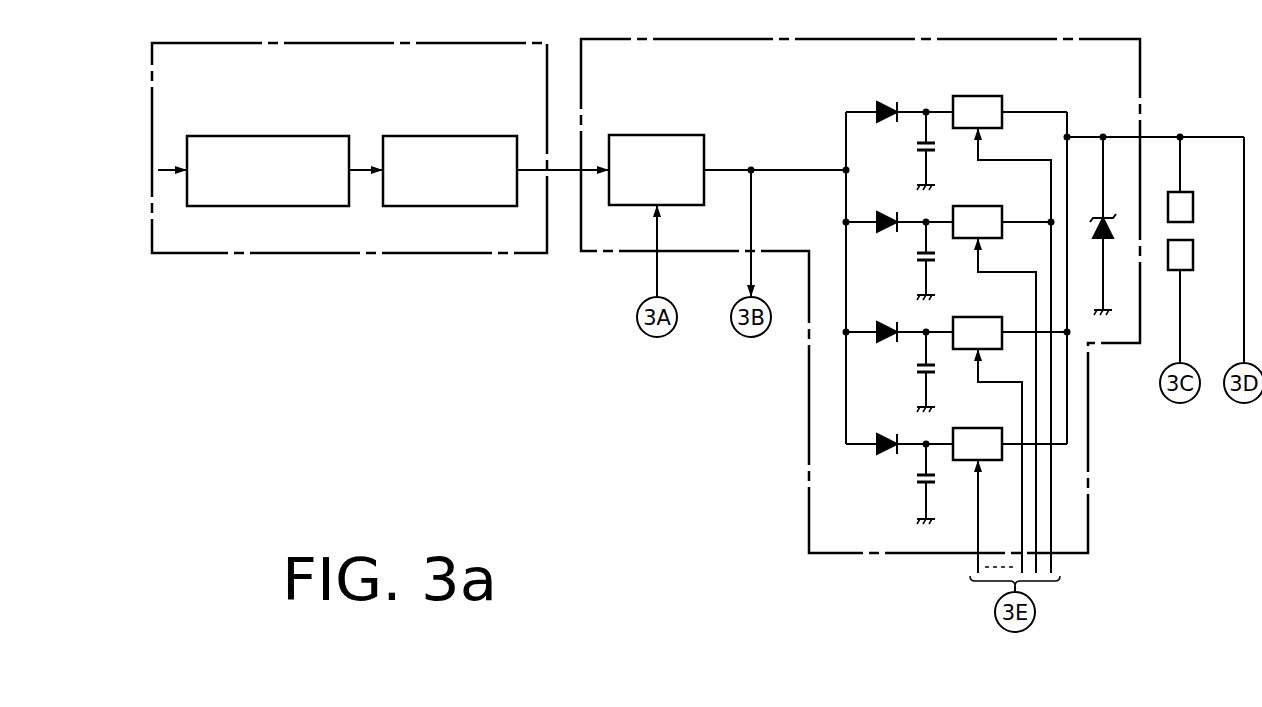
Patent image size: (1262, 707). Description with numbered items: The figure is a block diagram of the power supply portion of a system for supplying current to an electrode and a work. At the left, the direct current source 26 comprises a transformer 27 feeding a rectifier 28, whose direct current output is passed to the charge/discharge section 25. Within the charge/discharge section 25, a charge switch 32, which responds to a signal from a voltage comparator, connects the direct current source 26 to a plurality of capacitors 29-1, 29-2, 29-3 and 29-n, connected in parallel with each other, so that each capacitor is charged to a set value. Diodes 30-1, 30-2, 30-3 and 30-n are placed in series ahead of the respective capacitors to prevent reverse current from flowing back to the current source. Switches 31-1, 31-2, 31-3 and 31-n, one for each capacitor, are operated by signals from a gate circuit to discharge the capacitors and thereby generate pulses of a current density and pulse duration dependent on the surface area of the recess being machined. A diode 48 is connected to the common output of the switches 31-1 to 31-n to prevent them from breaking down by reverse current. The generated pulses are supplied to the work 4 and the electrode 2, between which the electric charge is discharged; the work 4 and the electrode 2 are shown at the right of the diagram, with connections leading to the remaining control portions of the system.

The charge/discharge section 25 is at (378, 254).
The transformer 27 is at (338, 135).
The rectifier 28 is at (501, 135).
The direct current source 26 is at (809, 520).
The charge switch 32 is at (697, 132).
The diode 30-1 is at (886, 103).
The diode 30-2 is at (886, 213).
The diode 30-3 is at (886, 324).
The diode 30-n is at (886, 434).
The capacitor 29-1 is at (917, 148).
The capacitor 29-2 is at (917, 258).
The capacitor 29-3 is at (917, 368).
The capacitor 29-n is at (917, 478).
The switch 31-1 is at (999, 98).
The switch 31-2 is at (999, 210).
The switch 31-3 is at (999, 319).
The switch 31-n is at (999, 431).
The diode 48 is at (1127, 214).
The work 4 is at (1194, 209).
The electrode 2 is at (1194, 258).